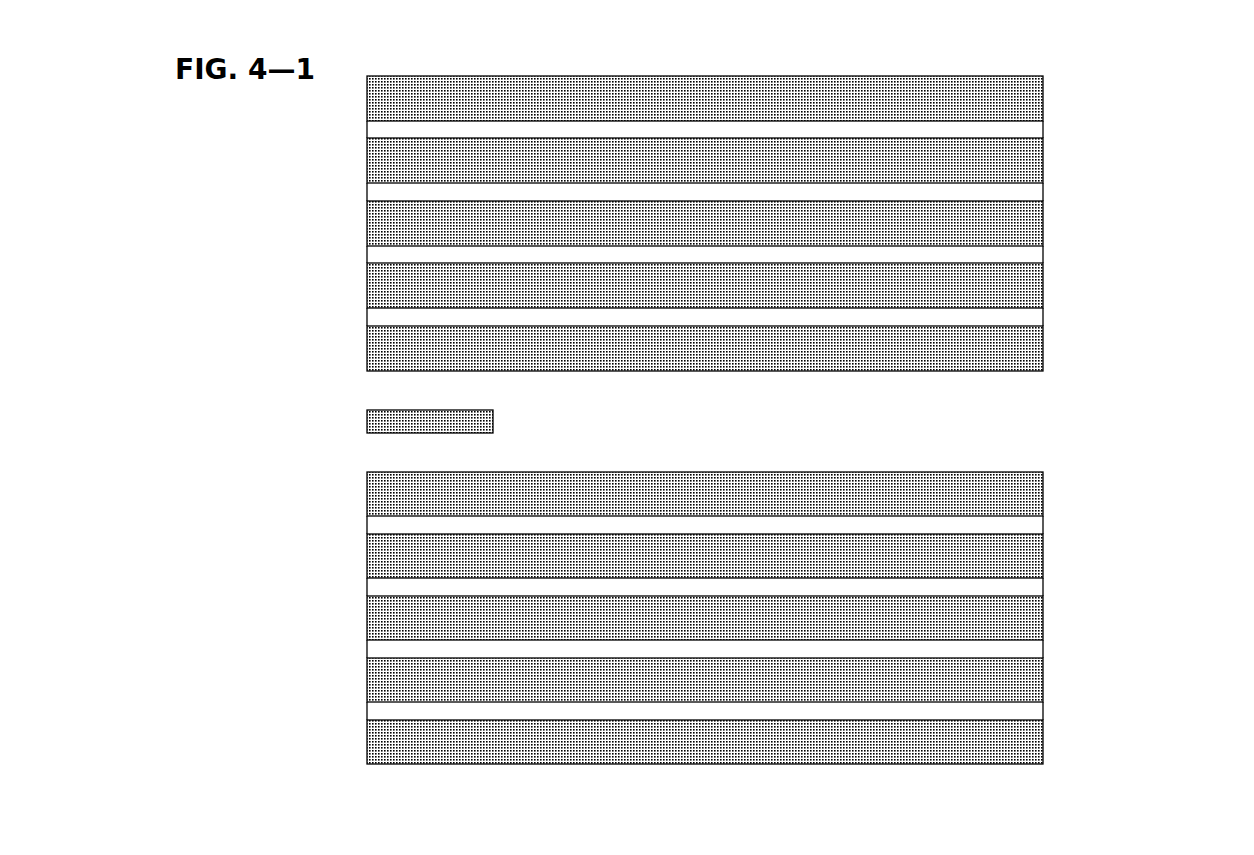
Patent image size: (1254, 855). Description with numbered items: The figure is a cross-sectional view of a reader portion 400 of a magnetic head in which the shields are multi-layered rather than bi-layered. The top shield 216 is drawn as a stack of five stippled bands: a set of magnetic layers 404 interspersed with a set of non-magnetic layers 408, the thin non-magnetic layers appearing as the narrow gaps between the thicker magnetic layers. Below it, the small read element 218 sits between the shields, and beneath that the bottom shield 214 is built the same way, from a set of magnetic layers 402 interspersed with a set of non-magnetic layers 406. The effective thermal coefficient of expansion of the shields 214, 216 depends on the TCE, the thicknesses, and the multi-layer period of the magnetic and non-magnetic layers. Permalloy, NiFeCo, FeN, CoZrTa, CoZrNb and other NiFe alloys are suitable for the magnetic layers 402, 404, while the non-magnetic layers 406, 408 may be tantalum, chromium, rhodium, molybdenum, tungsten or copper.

The reader portion 400 is at (1122, 112).
The top shield 216 is at (1055, 79).
The bottom shield 214 is at (1094, 744).
The read element 218 is at (367, 422).
The magnetic layers 404 is at (367, 99).
The non-magnetic layers 408 is at (1043, 130).
The magnetic layers 402 is at (367, 742).
The non-magnetic layers 406 is at (1043, 711).